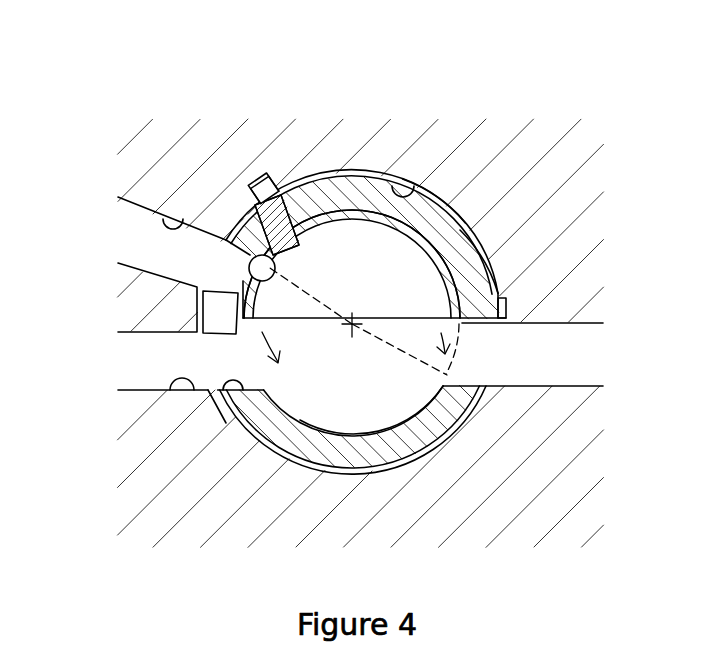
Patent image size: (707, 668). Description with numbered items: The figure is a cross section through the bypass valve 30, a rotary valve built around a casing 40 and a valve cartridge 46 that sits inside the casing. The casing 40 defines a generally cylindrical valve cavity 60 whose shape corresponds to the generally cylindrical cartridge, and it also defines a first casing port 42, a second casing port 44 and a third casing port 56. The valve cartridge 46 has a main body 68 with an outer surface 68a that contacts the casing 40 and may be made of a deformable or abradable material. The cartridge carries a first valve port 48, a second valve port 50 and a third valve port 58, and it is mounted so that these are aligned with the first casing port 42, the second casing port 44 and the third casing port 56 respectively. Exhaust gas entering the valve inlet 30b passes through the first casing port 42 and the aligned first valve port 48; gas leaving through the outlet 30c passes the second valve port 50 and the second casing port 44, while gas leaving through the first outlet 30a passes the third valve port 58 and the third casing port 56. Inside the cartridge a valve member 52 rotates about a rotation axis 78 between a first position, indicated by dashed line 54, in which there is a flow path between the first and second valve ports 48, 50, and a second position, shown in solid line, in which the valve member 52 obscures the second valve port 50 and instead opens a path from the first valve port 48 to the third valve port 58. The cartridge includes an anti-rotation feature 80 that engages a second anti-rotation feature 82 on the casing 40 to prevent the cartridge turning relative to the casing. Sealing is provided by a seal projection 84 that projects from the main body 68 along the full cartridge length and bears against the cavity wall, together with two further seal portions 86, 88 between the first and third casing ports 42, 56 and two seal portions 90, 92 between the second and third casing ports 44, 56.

The bypass valve 30 is at (466, 88).
The casing 40 is at (540, 190).
The first outlet 30a is at (645, 357).
The valve inlet 30b is at (35, 365).
The outlet 30c is at (52, 220).
The first casing port 42 is at (207, 392).
The second casing port 44 is at (188, 214).
The valve cartridge 46 is at (350, 180).
The first valve port 48 is at (227, 410).
The second valve port 50 is at (293, 262).
The valve member 52 is at (497, 253).
The dashed line 54 is at (418, 365).
The third casing port 56 is at (548, 323).
The third valve port 58 is at (478, 386).
The valve cavity 60 is at (416, 190).
The main body 68 is at (317, 448).
The outer surface 68a is at (440, 188).
The rotation axis 78 is at (352, 330).
The anti-rotation feature 80 is at (277, 187).
The second anti-rotation feature 82 is at (278, 186).
The seal projection 84 is at (196, 318).
The seal portion 86 is at (235, 417).
The seal portion 88 is at (483, 400).
The seal portion 90 is at (433, 273).
The seal portion 92 is at (252, 183).